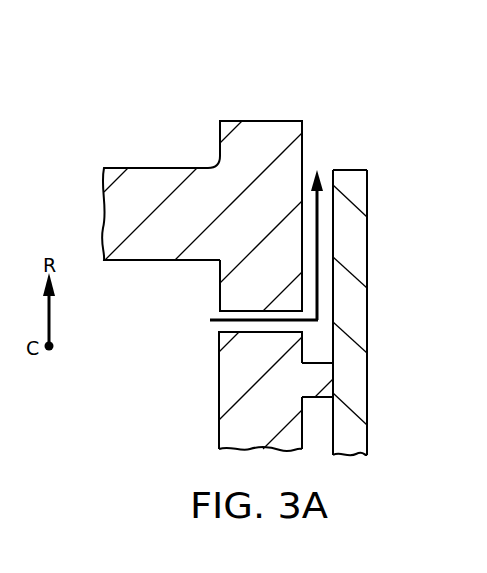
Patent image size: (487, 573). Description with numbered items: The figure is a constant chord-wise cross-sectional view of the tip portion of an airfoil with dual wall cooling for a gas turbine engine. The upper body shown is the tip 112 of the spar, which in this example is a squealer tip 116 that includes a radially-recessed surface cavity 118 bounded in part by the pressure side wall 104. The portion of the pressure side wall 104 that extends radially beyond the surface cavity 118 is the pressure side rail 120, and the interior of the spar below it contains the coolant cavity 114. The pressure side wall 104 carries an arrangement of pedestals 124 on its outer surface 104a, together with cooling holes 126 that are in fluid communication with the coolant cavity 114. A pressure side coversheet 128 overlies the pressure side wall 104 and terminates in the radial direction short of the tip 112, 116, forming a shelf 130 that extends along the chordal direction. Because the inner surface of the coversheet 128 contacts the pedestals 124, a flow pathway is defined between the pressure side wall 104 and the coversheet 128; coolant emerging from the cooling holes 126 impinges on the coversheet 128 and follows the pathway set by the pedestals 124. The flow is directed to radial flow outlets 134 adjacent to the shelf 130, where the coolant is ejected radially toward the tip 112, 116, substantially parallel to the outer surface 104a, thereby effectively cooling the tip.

The tip 112 is at (144, 82).
The squealer tip 116 is at (142, 76).
The radially-recessed surface cavity 118 is at (158, 168).
The pressure side rail 120 is at (260, 119).
The cooling holes 126 is at (233, 308).
The radial flow outlets 134 is at (322, 140).
The pressure side coversheet 128 is at (357, 246).
The shelf 130 is at (352, 166).
The pedestals 124 is at (313, 362).
The pressure side wall 104 is at (228, 377).
The outer surface 104a is at (305, 437).
The coolant cavity 114 is at (117, 386).